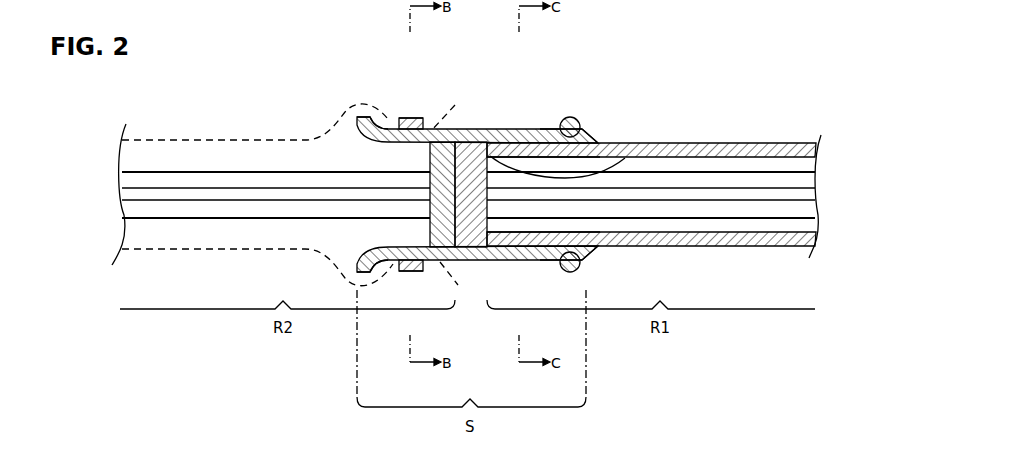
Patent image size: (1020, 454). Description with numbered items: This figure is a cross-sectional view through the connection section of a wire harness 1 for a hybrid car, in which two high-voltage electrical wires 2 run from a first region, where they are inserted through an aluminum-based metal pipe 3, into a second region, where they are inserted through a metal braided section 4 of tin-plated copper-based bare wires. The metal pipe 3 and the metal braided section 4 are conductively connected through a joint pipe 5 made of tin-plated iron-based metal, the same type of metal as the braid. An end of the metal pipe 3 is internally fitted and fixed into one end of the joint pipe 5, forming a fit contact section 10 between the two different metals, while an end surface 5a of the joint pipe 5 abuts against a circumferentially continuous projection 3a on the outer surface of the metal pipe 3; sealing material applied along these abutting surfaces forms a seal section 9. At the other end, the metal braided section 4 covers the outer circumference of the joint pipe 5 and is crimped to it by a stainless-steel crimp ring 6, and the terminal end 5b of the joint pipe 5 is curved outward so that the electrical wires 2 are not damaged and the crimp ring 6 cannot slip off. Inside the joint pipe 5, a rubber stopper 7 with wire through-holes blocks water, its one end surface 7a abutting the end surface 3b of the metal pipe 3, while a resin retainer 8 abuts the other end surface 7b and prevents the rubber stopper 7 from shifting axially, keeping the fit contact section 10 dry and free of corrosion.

The wire harness 1 is at (502, 200).
The high-voltage electrical wire 2 is at (808, 182).
The metal pipe 3 is at (668, 127).
The projection 3a is at (592, 130).
The end surface of the metal pipe 3b is at (513, 142).
The metal braided section 4 is at (234, 126).
The joint pipe 5 is at (486, 117).
The end surface on one end of the joint pipe 5a is at (558, 127).
The terminal end on the other end of the joint pipe 5b is at (346, 119).
The crimp ring 6 is at (408, 118).
The rubber stopper 7 is at (490, 146).
The one end surface of the rubber stopper 7a is at (528, 143).
The other end surface of the rubber stopper 7b is at (447, 105).
The retainer 8 is at (438, 127).
The seal section 9 is at (579, 118).
The fit contact section 10 is at (625, 158).